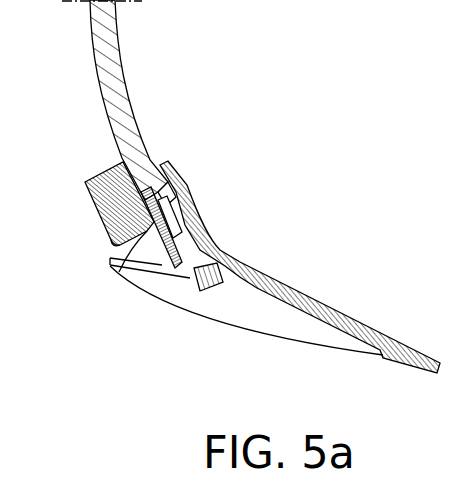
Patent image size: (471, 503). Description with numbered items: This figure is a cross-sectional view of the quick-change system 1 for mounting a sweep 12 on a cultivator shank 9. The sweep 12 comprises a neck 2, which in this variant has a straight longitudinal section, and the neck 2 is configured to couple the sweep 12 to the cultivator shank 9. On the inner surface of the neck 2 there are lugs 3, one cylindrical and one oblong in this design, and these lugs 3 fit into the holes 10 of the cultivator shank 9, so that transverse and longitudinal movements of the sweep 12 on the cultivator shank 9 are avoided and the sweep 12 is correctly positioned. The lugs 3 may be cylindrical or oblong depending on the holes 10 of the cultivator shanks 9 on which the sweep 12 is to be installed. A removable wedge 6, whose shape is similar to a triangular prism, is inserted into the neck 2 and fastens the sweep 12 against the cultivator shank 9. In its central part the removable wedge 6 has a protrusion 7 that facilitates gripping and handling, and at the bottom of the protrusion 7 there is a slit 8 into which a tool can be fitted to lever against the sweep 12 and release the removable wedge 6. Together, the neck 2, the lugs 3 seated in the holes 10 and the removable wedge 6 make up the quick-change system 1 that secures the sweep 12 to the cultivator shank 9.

The quick-change system 1 is at (270, 147).
The neck 2 is at (162, 183).
The lug 3 is at (196, 268).
The removable wedge 6 is at (84, 176).
The protrusion 7 is at (102, 215).
The slit 8 is at (146, 287).
The cultivator shank 9 is at (122, 58).
The hole 10 is at (140, 250).
The sweep 12 is at (297, 300).